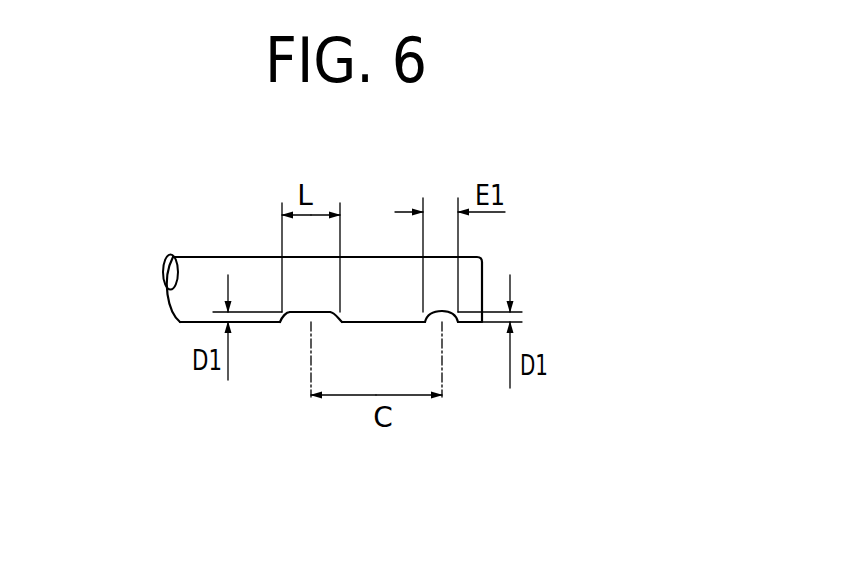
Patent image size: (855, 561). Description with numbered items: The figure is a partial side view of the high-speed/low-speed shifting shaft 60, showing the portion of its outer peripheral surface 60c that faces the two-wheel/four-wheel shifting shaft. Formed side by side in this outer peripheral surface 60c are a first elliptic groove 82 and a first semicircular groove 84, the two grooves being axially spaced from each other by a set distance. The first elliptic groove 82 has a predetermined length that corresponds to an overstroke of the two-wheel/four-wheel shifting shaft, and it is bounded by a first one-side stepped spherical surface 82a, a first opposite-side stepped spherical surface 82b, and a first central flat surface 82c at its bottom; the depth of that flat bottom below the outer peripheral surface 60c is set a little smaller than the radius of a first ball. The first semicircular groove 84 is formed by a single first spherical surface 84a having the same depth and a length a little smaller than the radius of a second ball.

The high-speed/low-speed shifting shaft 60 is at (358, 322).
The outer peripheral surface 60c is at (180, 322).
The first elliptic groove 82 is at (272, 401).
The first one-side stepped spherical surface 82a is at (283, 322).
The first opposite-side stepped spherical surface 82b is at (338, 321).
The bottom surface of groove 82c is at (293, 322).
The first semicircular groove 84 is at (425, 300).
The first spherical surface 84a is at (433, 320).